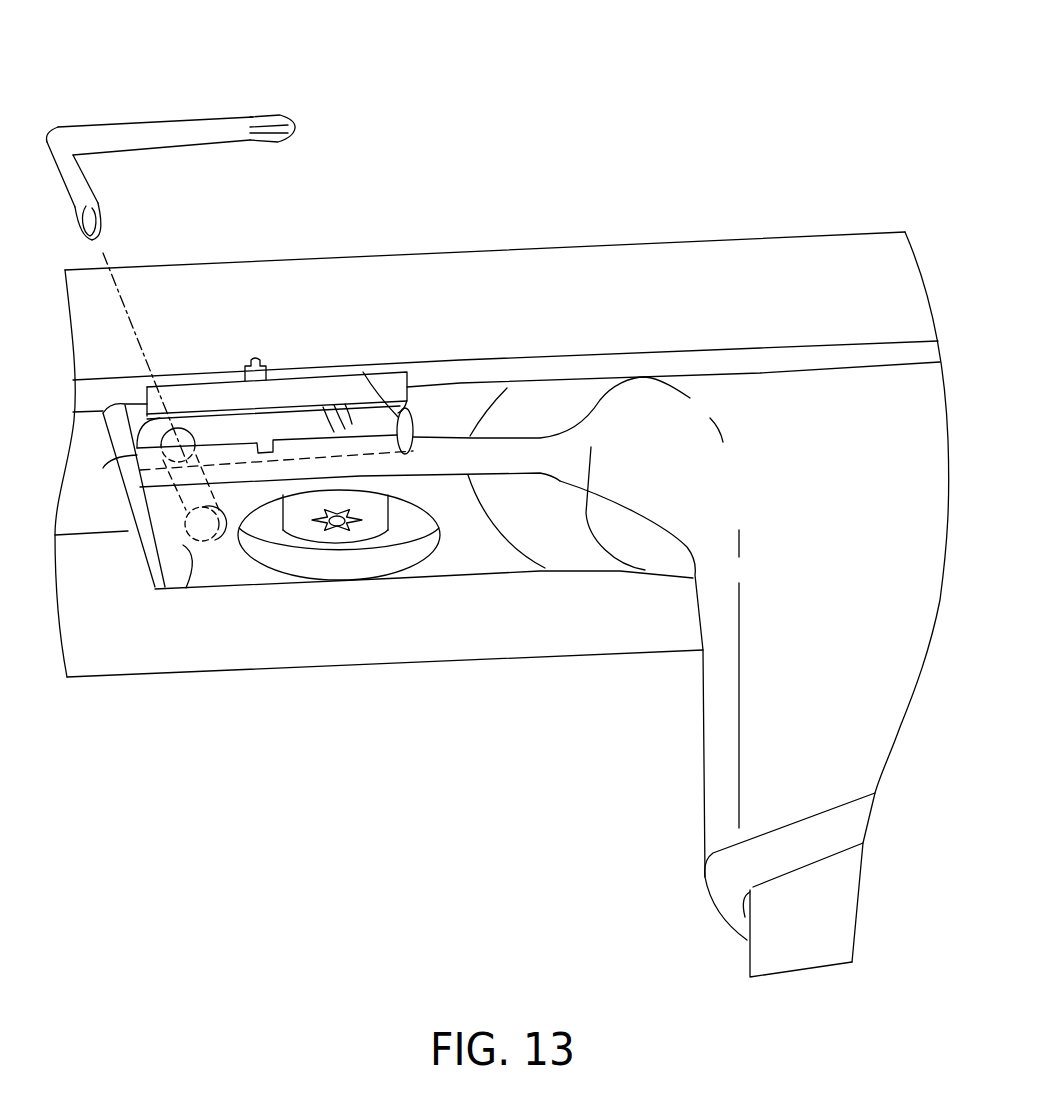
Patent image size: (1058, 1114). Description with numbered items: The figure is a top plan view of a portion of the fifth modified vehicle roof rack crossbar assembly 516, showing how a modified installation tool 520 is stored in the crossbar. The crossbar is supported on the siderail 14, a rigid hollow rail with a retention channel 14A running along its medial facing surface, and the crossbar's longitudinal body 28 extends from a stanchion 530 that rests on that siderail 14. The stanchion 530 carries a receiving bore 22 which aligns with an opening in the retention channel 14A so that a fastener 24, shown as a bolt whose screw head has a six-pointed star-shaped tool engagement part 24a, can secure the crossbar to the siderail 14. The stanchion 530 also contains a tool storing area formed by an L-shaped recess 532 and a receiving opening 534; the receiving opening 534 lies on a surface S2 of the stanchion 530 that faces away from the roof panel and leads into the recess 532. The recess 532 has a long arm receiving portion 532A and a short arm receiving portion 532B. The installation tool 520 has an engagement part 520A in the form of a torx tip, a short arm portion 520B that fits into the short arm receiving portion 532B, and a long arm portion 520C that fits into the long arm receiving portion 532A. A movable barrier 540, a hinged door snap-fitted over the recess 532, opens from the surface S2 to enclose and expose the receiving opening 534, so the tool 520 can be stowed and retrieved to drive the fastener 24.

The siderail 14 is at (470, 305).
The retention channel 14A is at (87, 503).
The receiving bore 22 is at (415, 550).
The fastener 24 is at (363, 533).
The tool engagement part 24a is at (337, 533).
The longitudinal body 28 is at (745, 958).
The fifth modified vehicle roof rack crossbar assembly 516 is at (586, 115).
The installation tool 520 is at (189, 242).
The engagement part 520A is at (283, 143).
The short arm portion 520B is at (93, 182).
The long arm portion 520C is at (173, 118).
The stanchion 530 is at (705, 740).
The recess 532 is at (217, 438).
The long arm receiving portion 532A is at (413, 447).
The short arm receiving portion 532B is at (195, 533).
The receiving opening 534 is at (363, 372).
The movable barrier 540 is at (307, 375).
The surface S2 is at (440, 412).